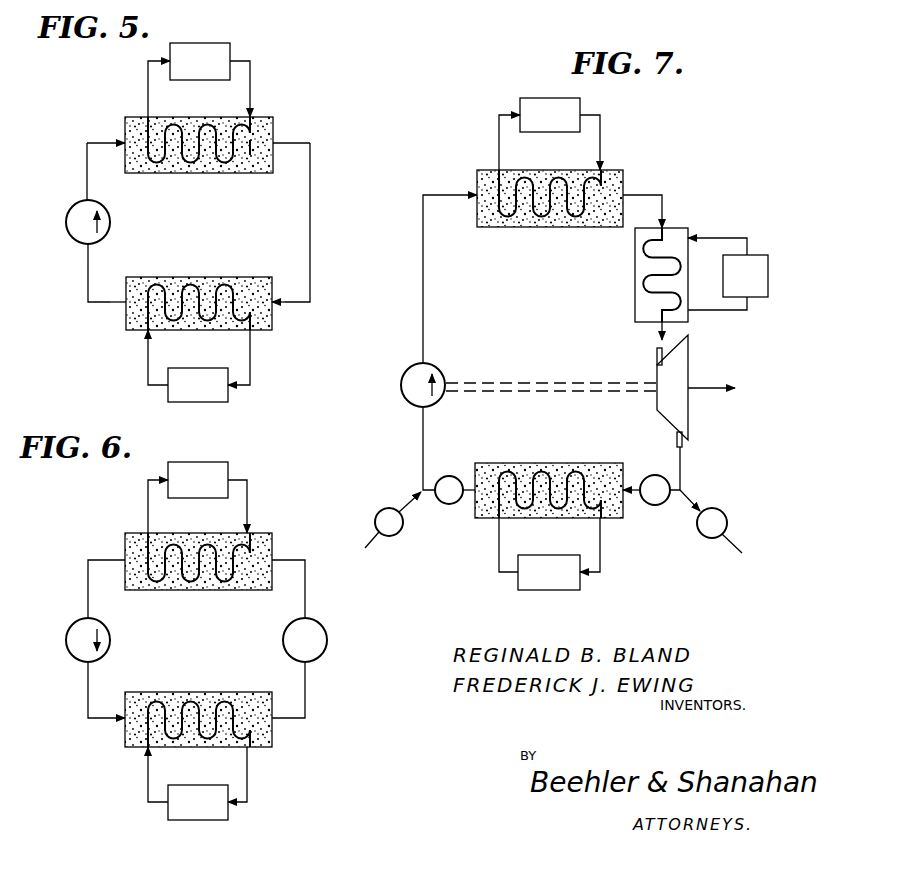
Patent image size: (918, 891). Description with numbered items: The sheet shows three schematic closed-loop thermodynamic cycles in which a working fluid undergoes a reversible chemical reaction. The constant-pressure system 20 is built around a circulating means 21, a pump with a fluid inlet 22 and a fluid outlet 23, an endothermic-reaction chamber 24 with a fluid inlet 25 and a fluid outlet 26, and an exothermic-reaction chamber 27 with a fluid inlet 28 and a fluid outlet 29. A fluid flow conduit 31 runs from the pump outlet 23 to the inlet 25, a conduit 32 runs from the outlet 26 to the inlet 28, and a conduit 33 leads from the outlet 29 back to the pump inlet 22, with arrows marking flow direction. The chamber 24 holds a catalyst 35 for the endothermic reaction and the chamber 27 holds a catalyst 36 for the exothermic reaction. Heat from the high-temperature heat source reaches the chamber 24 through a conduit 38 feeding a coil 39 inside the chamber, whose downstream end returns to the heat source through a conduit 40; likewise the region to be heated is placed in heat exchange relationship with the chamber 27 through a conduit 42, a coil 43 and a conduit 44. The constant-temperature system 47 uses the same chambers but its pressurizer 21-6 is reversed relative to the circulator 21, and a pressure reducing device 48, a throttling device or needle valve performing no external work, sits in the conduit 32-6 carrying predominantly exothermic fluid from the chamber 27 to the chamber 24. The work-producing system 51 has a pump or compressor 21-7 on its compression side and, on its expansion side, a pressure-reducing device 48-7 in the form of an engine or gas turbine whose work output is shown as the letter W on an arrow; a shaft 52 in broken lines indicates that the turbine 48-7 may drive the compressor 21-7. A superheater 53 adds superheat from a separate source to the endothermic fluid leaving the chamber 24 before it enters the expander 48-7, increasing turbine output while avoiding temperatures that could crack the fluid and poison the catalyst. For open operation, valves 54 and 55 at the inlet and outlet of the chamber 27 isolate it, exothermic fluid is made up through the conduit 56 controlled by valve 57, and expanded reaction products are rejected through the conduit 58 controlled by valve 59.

In FIG. 5, the constant-pressure system 20 is at (90, 100).
In FIG. 5, the circulating means 21 is at (66, 221).
In FIG. 5, the fluid inlet 22 is at (87, 245).
In FIG. 5, the fluid outlet 23 is at (85, 200).
In FIG. 5, the endothermic-reaction chamber 24 is at (197, 173).
In FIG. 6, the endothermic-reaction chamber 24 is at (197, 590).
In FIG. 7, the endothermic-reaction chamber 24 is at (528, 227).
In FIG. 5, the fluid inlet 25 is at (125, 140).
In FIG. 5, the fluid outlet 26 is at (275, 141).
In FIG. 5, the exothermic-reaction chamber 27 is at (168, 277).
In FIG. 6, the exothermic-reaction chamber 27 is at (180, 692).
In FIG. 7, the exothermic-reaction chamber 27 is at (534, 463).
In FIG. 5, the fluid inlet 28 is at (270, 300).
In FIG. 5, the fluid outlet 29 is at (126, 310).
In FIG. 5, the fluid flow conduit 31 is at (87, 170).
In FIG. 5, the conduit 32 is at (310, 193).
In FIG. 5, the conduit 33 is at (88, 279).
In FIG. 5, the catalyst 35 is at (232, 162).
In FIG. 5, the catalyst 36 is at (225, 288).
In FIG. 5, the conduit 38 is at (250, 80).
In FIG. 5, the coil 39 is at (199, 127).
In FIG. 5, the conduit 40 is at (148, 91).
In FIG. 5, the conduit 42 is at (148, 376).
In FIG. 5, the coil 43 is at (222, 320).
In FIG. 5, the conduit 44 is at (250, 356).
In FIG. 6, the constant-temperature system 47 is at (90, 545).
In FIG. 6, the pressure reducing device 48 is at (328, 631).
In FIG. 6, the pressurizer 21-6 is at (67, 640).
In FIG. 6, the conduit 32-6 is at (305, 591).
In FIG. 7, the work-producing system 51 is at (660, 156).
In FIG. 7, the shaft 52 is at (540, 384).
In FIG. 7, the superheater 53 is at (685, 228).
In FIG. 7, the valve 54 is at (664, 460).
In FIG. 7, the valve 55 is at (447, 476).
In FIG. 7, the makeup conduit 56 is at (411, 507).
In FIG. 7, the valve 57 is at (392, 536).
In FIG. 7, the outlet conduit 58 is at (688, 492).
In FIG. 7, the valve 59 is at (727, 520).
In FIG. 7, the pump or compressor 21-7 is at (400, 392).
In FIG. 7, the pressure-reducing device 48-7 is at (685, 418).